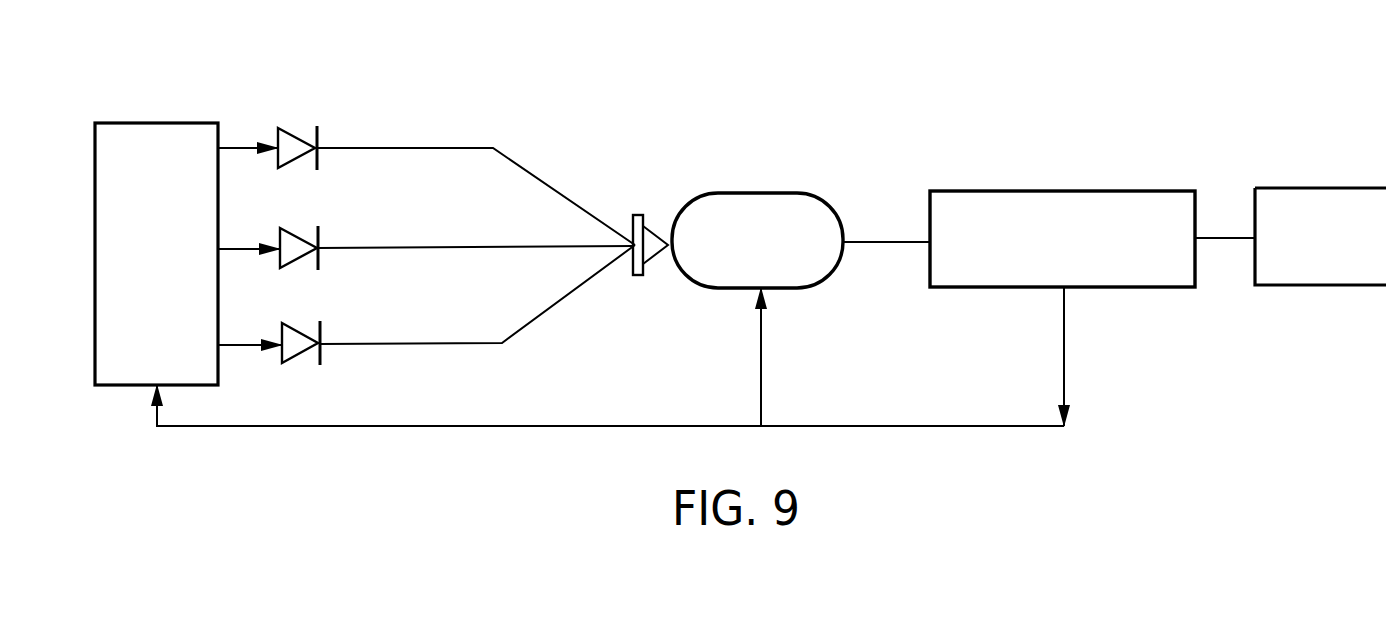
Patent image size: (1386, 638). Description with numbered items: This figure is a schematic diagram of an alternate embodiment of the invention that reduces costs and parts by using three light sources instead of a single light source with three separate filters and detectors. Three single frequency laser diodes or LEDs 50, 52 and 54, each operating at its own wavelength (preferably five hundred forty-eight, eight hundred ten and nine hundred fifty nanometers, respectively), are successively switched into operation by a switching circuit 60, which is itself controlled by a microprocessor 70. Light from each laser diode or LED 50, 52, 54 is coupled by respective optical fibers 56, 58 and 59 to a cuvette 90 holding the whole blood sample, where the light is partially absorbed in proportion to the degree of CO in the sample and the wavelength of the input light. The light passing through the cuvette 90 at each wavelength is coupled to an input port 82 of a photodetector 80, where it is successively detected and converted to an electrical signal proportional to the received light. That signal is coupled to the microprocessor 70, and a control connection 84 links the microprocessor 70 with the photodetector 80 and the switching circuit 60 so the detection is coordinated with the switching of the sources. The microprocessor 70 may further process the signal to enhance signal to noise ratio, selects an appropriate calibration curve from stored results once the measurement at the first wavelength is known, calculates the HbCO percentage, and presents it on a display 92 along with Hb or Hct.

The switching circuit 60 is at (150, 123).
The laser diode or LED 50 is at (290, 133).
The laser diode or LED 52 is at (292, 233).
The laser diode or LED 54 is at (293, 330).
The optical fiber 56 is at (538, 180).
The optical fiber 58 is at (500, 247).
The optical fiber 59 is at (548, 311).
The cuvette 90 is at (637, 276).
The combined light input 82 is at (652, 226).
The photodetector 80 is at (788, 193).
The control signal line 84 is at (761, 334).
The microprocessor 70 is at (1085, 191).
The display 92 is at (1315, 188).